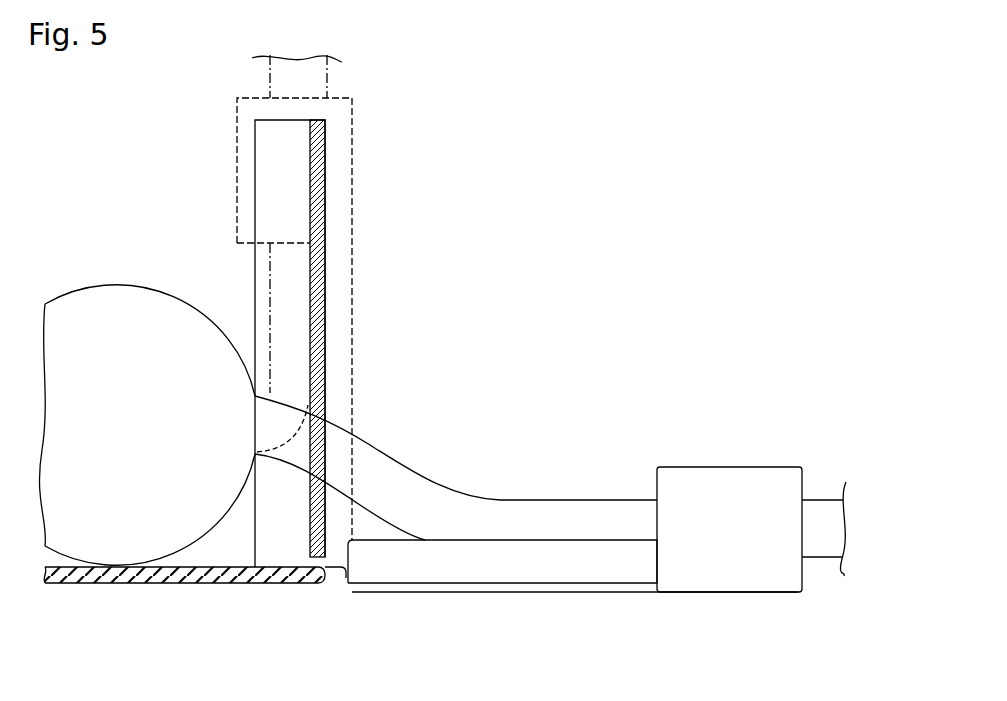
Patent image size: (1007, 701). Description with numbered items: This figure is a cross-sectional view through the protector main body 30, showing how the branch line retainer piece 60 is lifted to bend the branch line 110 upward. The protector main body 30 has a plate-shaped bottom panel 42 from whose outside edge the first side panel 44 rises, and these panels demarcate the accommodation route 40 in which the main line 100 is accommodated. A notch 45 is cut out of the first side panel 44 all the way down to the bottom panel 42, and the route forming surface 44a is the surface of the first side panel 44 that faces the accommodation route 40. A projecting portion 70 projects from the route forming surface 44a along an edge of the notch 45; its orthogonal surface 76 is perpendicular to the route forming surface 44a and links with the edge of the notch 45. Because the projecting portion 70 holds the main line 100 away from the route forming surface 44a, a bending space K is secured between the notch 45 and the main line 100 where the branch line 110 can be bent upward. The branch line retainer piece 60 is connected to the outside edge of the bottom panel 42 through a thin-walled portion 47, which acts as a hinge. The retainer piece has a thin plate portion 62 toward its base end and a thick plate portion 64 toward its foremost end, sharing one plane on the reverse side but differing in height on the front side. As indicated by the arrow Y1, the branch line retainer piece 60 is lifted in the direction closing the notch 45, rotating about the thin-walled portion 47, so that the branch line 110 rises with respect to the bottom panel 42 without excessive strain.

The main line 100 is at (80, 291).
The branch line 110 is at (345, 66).
The accommodation route 40 is at (138, 229).
The first side panel 44 is at (358, 343).
The notch 45 is at (318, 156).
The route forming surface 44a is at (308, 205).
The projecting portion 70 is at (222, 315).
The orthogonal surface 76 is at (263, 272).
The bending space K is at (286, 386).
The bottom panel 42 is at (205, 585).
The thin-walled portion 47 is at (334, 578).
The branch line retainer piece 60 is at (575, 461).
The thin plate portion 62 is at (657, 590).
The thick plate portion 64 is at (730, 549).
The protector main body 30 is at (462, 199).
The arrow Y1 is at (545, 363).